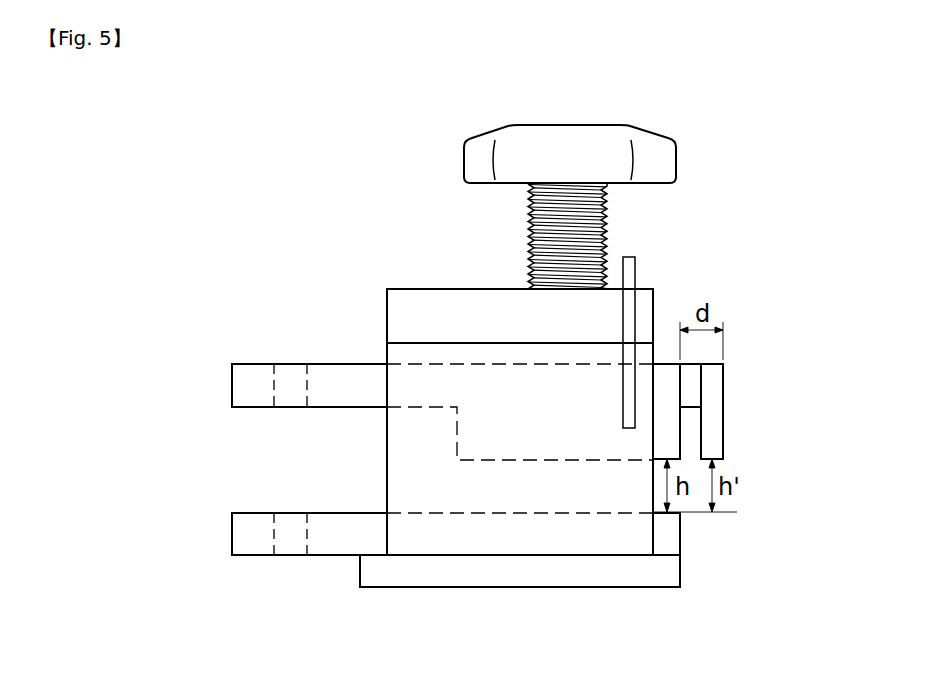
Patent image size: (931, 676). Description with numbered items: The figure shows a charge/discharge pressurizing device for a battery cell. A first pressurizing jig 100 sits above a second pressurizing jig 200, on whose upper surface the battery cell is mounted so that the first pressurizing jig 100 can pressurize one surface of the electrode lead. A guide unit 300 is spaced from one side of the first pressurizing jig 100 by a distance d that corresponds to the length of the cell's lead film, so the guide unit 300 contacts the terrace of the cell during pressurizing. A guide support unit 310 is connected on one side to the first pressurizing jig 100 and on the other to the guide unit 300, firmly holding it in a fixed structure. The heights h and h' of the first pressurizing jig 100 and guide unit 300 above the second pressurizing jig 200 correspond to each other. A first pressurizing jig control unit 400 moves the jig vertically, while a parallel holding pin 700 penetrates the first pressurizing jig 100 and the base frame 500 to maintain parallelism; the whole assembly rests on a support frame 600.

The first pressurizing jig 100 is at (480, 433).
The second pressurizing jig 200 is at (668, 533).
The guide unit 300 is at (710, 412).
The guide support unit 310 is at (690, 382).
The first pressurizing jig control unit 400 is at (608, 138).
The base frame 500 is at (398, 302).
The support frame 600 is at (575, 572).
The parallel holding pin 700 is at (628, 272).